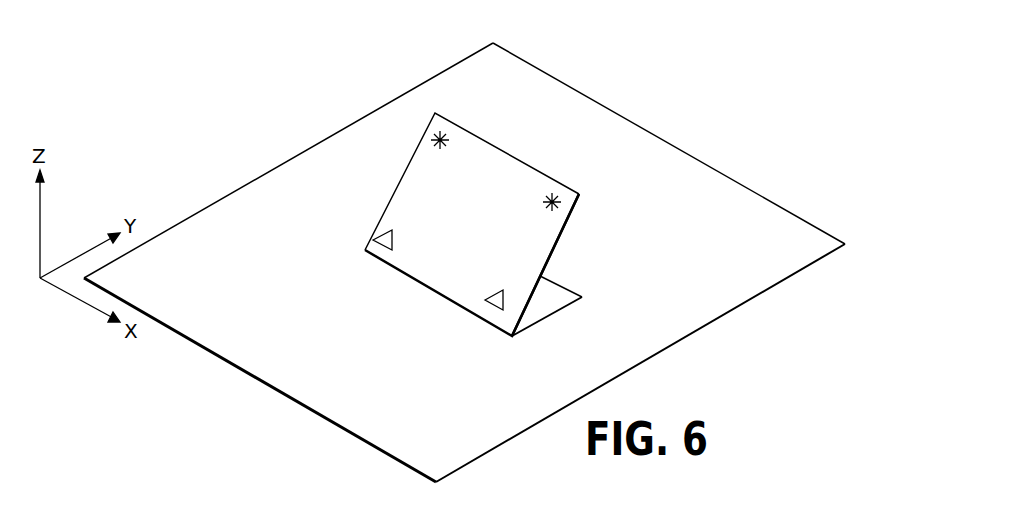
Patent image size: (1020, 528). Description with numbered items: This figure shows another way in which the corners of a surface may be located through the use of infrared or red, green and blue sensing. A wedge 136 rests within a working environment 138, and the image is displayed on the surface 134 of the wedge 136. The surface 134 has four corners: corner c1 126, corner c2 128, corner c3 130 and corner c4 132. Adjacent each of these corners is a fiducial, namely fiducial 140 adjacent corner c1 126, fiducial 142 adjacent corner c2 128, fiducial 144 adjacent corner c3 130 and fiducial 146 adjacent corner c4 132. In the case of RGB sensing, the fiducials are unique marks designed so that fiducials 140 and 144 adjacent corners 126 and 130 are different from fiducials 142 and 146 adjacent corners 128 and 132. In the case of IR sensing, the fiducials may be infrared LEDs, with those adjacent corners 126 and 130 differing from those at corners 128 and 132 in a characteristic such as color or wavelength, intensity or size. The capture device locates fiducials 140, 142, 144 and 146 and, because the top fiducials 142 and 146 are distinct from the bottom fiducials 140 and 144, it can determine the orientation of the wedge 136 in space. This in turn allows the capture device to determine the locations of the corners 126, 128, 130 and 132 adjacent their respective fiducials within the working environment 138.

The corner c1 126 is at (333, 268).
The corner c2 128 is at (450, 88).
The corner c3 130 is at (503, 368).
The corner c4 132 is at (607, 172).
The surface 134 is at (445, 258).
The wedge 136 is at (566, 236).
The working environment 138 is at (762, 218).
The fiducial 140 is at (385, 226).
The fiducial 142 is at (440, 150).
The fiducial 144 is at (491, 290).
The fiducial 146 is at (543, 190).